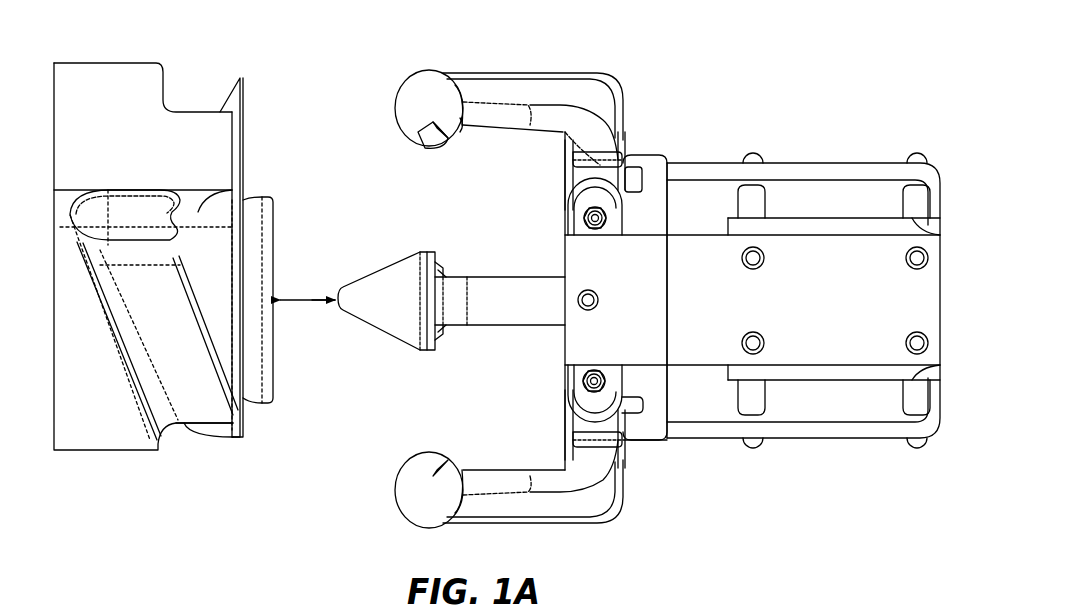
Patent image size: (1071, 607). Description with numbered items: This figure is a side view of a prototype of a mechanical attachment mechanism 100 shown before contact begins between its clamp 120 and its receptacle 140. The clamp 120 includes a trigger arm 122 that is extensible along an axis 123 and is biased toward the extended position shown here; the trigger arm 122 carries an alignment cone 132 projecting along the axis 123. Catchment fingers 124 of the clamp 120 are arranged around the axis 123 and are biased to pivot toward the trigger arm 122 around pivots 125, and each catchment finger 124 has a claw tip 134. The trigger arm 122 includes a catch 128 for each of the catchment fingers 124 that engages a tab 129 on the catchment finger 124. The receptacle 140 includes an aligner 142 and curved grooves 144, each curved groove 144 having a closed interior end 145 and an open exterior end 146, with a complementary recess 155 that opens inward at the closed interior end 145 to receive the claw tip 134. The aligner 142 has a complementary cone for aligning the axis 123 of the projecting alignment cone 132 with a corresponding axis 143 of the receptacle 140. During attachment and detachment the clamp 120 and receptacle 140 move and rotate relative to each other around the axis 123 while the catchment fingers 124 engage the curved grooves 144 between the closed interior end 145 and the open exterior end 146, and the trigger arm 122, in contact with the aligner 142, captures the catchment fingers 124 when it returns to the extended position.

The mechanical attachment mechanism 100 is at (828, 124).
The clamp 120 is at (383, 80).
The trigger arm 122 is at (519, 276).
The axis 123 is at (318, 302).
The catchment fingers 124 is at (498, 128).
The pivots 125 is at (584, 218).
The catch 128 is at (640, 442).
The tab 129 is at (640, 407).
The alignment cone 132 is at (388, 264).
The claw tip 134 is at (432, 132).
The receptacle 140 is at (265, 105).
The aligner 142 is at (274, 227).
The axis 143 is at (298, 299).
The curved grooves 144 is at (194, 112).
The closed interior end 145 is at (150, 233).
The open exterior end 146 is at (220, 410).
The complementary recess 155 is at (190, 212).